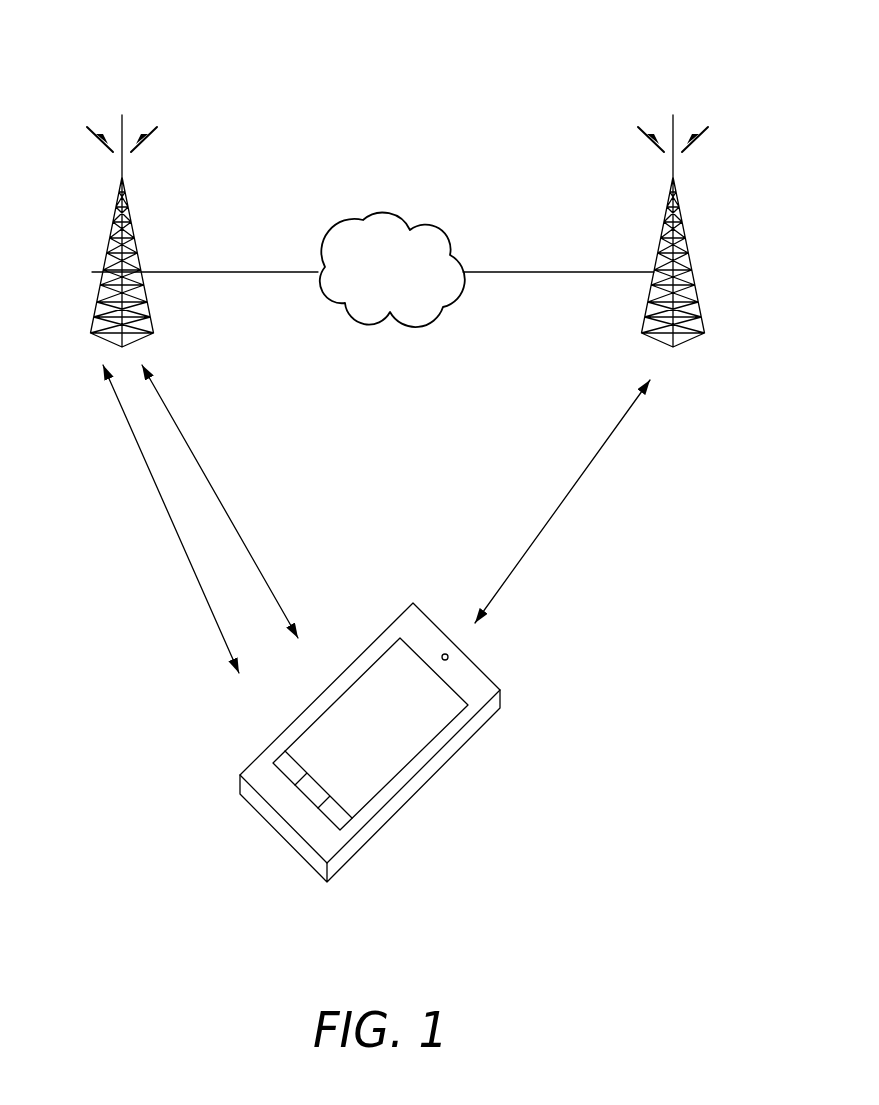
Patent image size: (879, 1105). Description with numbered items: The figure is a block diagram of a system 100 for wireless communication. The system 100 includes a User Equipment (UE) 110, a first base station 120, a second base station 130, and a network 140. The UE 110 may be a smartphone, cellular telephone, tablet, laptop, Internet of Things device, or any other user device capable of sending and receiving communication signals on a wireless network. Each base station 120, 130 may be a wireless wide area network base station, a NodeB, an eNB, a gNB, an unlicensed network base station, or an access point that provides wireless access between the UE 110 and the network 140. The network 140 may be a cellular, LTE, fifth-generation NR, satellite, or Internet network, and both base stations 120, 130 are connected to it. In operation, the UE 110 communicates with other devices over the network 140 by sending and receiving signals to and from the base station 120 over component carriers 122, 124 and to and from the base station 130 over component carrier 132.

The system 100 is at (738, 69).
The User Equipment (UE) 110 is at (503, 690).
The base station 120 is at (92, 272).
The component carrier 122 is at (163, 502).
The component carrier 124 is at (214, 492).
The base station 130 is at (684, 227).
The component carrier 132 is at (565, 500).
The network 140 is at (383, 212).